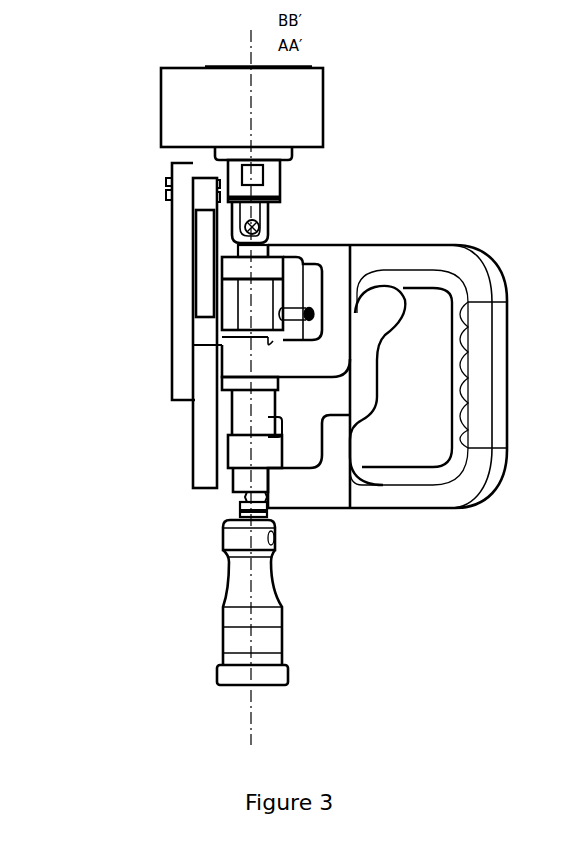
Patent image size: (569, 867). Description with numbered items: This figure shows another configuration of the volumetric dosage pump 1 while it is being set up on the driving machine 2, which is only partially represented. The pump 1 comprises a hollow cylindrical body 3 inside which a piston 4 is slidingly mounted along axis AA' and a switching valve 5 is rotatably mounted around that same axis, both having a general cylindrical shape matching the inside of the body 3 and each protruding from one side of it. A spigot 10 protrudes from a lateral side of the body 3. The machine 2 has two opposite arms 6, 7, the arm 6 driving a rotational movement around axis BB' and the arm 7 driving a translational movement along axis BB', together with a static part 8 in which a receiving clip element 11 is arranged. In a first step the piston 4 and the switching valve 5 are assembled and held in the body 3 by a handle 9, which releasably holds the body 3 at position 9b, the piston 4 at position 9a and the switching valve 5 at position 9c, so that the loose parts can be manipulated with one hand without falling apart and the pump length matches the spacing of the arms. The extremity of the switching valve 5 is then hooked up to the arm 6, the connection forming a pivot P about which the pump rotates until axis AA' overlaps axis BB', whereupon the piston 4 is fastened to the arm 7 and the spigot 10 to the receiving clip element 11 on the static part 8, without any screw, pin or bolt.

The pump 1 is at (290, 376).
The machine 2 is at (183, 98).
The hollow cylindrical body 3 is at (273, 330).
The piston 4 is at (262, 500).
The switching valve 5 is at (268, 208).
The arm 6 is at (267, 183).
The arm 7 is at (248, 590).
The static part 8 is at (178, 212).
The handle 9 is at (467, 243).
The position 9a is at (243, 500).
The position 9b is at (235, 450).
The position 9c is at (270, 247).
The spigot 10 is at (213, 292).
The receiving clip element 11 is at (217, 305).
The pivot P is at (267, 225).